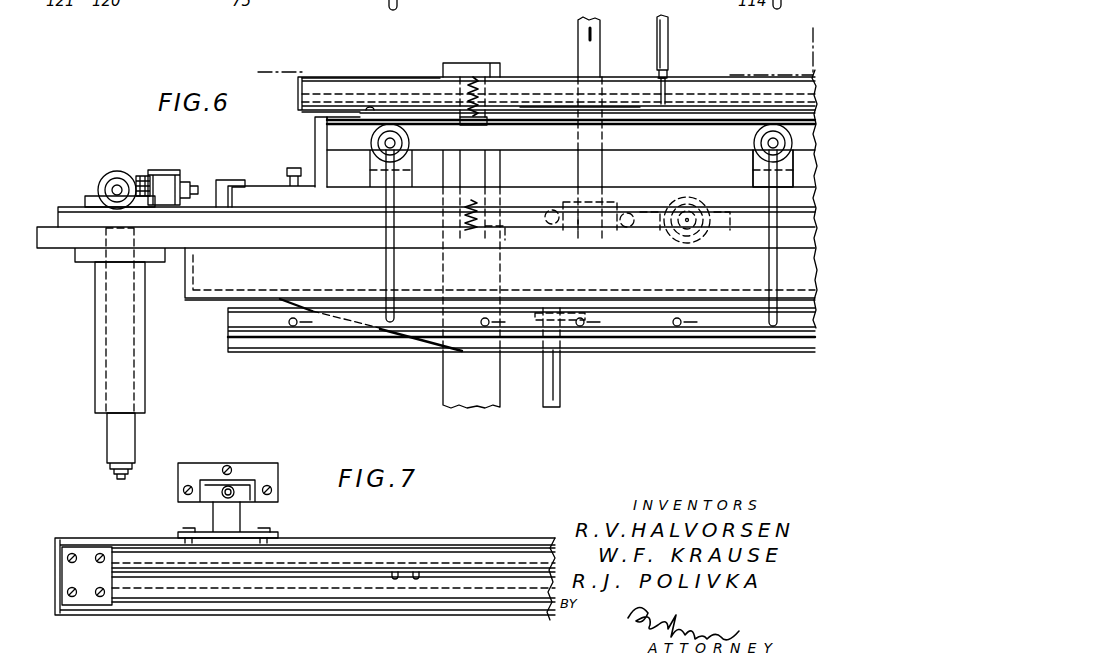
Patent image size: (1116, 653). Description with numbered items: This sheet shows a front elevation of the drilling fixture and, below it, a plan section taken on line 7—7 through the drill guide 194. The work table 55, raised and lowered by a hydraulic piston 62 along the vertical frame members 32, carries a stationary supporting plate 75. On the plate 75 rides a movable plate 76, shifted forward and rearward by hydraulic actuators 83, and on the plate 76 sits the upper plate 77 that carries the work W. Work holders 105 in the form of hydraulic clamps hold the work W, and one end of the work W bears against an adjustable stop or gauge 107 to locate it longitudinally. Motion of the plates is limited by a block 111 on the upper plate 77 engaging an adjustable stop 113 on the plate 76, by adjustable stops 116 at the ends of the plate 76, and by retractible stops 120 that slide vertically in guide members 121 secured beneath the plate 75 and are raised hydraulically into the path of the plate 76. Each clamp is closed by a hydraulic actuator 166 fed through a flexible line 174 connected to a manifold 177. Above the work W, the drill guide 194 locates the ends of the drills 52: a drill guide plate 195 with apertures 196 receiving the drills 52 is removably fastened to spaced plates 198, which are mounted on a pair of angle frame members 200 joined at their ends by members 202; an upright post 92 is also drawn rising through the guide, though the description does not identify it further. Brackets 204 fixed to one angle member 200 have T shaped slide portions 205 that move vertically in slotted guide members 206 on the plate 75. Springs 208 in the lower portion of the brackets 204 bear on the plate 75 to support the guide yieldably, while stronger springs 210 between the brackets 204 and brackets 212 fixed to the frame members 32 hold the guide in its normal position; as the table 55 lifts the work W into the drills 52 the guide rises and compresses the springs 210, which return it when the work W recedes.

In FIG. 6, the section line 7— 7 is at (277, 30).
In FIG. 6, the vertical standards or frame members 32 is at (443, 382).
In FIG. 6, the drills 52 is at (668, 72).
In FIG. 6, the work table 55 is at (207, 306).
In FIG. 6, the piston 62 is at (560, 382).
In FIG. 6, the supporting plate 75 is at (50, 240).
In FIG. 6, the movable plate 76 is at (60, 212).
In FIG. 6, the upper plate 77 is at (252, 184).
In FIG. 6, the hydraulic motors or actuators 83 is at (664, 200).
In FIG. 6, the upright post 92 is at (580, 30).
In FIG. 6, the work holders 105 is at (375, 136).
In FIG. 6, the stop or gauge 107 is at (316, 140).
In FIG. 6, the block 111 is at (215, 182).
In FIG. 6, the adjustable stop 113 is at (160, 170).
In FIG. 6, the adjustable stops 116 is at (118, 172).
In FIG. 6, the retractible stops 120 is at (100, 238).
In FIG. 6, the guide members 121 is at (95, 346).
In FIG. 6, the hydraulic actuator 166 is at (755, 158).
In FIG. 6, the flexible line 174 is at (386, 260).
In FIG. 6, the manifold 177 is at (337, 328).
In FIG. 6, the drill guide 194 is at (295, 93).
In FIG. 7, the drill guide 194 is at (512, 536).
In FIG. 6, the drill guide plate 195 is at (552, 110).
In FIG. 7, the drill guide plate 195 is at (162, 590).
In FIG. 7, the apertures 196 is at (416, 572).
In FIG. 7, the plates 198 is at (436, 558).
In FIG. 6, the angle frame members 200 is at (418, 92).
In FIG. 7, the angle frame members 200 is at (260, 608).
In FIG. 6, the end members 202 is at (238, 90).
In FIG. 7, the end members 202 is at (80, 556).
In FIG. 6, the brackets 204 is at (478, 170).
In FIG. 7, the brackets 204 is at (242, 528).
In FIG. 7, the T shaped slide portion 205 is at (256, 484).
In FIG. 7, the guide members 206 is at (218, 468).
In FIG. 6, the springs 208 is at (505, 240).
In FIG. 6, the springs 210 is at (480, 78).
In FIG. 7, the springs 210 is at (232, 486).
In FIG. 6, the brackets 212 is at (448, 66).
In FIG. 6, the work W is at (620, 112).